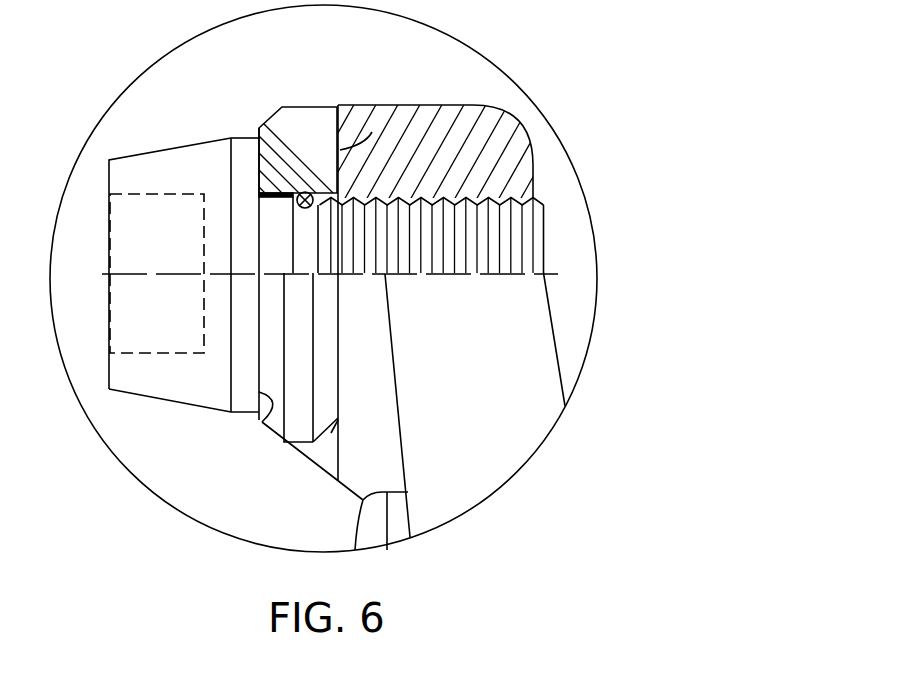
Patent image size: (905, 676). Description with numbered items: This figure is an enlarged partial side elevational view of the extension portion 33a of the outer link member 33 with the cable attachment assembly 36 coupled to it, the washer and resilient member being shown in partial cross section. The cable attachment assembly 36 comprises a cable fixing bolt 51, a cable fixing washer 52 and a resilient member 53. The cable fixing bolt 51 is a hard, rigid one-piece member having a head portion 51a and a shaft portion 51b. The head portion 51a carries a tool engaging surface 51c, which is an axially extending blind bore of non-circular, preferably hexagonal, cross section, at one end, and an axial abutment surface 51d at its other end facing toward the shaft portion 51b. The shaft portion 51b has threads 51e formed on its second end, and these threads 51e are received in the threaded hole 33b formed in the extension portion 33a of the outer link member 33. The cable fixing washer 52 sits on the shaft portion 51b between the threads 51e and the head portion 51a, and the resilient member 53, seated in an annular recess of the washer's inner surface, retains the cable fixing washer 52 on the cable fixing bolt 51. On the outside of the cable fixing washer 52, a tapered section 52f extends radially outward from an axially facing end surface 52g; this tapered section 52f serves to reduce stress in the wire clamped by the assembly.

The cable attachment assembly 36 is at (152, 118).
The cable fixing bolt 51 is at (195, 144).
The head portion 51a is at (163, 400).
The shaft portion 51b is at (482, 180).
The tool engaging surface 51c is at (137, 353).
The axial abutment surface 51d is at (266, 425).
The threads 51e is at (428, 257).
The cable fixing washer 52 is at (298, 94).
The tapered section 52f is at (338, 440).
The axially facing end surface 52g is at (372, 132).
The resilient member 53 is at (347, 192).
The outer link member 33 is at (528, 372).
The extension portion 33a is at (460, 100).
The threaded hole 33b is at (505, 222).